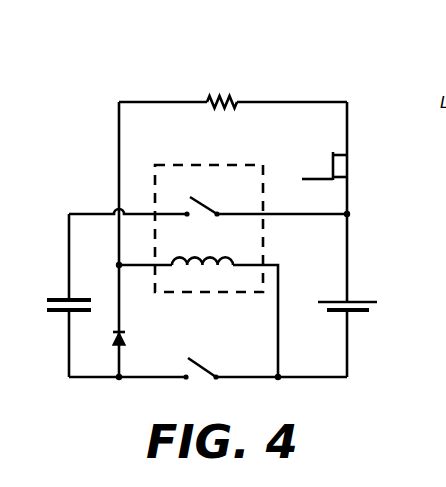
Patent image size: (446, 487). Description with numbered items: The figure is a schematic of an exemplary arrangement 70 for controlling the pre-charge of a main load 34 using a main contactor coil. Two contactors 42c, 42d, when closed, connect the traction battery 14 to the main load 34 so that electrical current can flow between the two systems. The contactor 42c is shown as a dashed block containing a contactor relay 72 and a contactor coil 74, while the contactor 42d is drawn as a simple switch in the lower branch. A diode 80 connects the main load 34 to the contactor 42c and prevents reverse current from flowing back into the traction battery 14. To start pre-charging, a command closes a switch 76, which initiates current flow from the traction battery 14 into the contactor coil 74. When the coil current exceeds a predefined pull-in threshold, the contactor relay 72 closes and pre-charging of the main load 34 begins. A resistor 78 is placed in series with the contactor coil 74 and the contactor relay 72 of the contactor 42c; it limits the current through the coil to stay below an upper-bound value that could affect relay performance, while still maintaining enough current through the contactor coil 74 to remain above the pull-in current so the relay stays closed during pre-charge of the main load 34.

The exemplary arrangement 70 is at (125, 42).
The resistor 78 is at (207, 97).
The contactor 42c is at (207, 153).
The contactor relay 72 is at (201, 197).
The contactor coil 74 is at (212, 257).
The switch 76 is at (336, 165).
The main load 34 is at (58, 297).
The traction battery 14 is at (358, 300).
The diode 80 is at (122, 330).
The contactor 42d is at (208, 360).